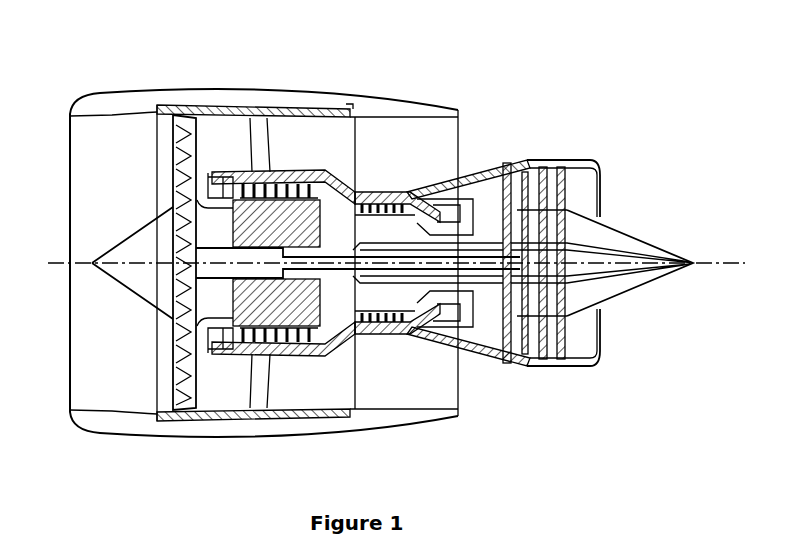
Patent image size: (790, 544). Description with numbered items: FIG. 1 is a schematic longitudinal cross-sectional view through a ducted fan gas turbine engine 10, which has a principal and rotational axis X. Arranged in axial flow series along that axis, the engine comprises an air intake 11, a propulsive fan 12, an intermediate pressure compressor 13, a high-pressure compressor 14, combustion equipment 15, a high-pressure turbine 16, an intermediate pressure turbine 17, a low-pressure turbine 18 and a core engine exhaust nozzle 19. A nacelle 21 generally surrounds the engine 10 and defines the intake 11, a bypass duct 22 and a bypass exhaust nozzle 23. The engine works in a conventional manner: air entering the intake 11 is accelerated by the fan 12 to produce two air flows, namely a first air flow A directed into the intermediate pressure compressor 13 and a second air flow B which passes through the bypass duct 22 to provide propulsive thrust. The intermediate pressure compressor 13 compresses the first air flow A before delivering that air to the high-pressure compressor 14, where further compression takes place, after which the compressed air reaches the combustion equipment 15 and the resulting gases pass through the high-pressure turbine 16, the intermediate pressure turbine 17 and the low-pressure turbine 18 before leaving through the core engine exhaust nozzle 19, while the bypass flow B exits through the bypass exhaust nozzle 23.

The ducted fan gas turbine engine 10 is at (130, 70).
The air intake 11 is at (112, 117).
The propulsive fan 12 is at (175, 362).
The intermediate pressure compressor 13 is at (290, 345).
The high-pressure compressor 14 is at (383, 200).
The combustion equipment 15 is at (420, 330).
The high-pressure turbine 16 is at (468, 340).
The intermediate pressure turbine 17 is at (490, 186).
The low-pressure turbine 18 is at (520, 350).
The core engine exhaust nozzle 19 is at (597, 166).
The nacelle 21 is at (265, 88).
The bypass duct 22 is at (433, 148).
The bypass exhaust nozzle 23 is at (456, 111).
The first air flow A is at (218, 190).
The second air flow B is at (230, 143).
The principal and rotational axis X is at (388, 264).